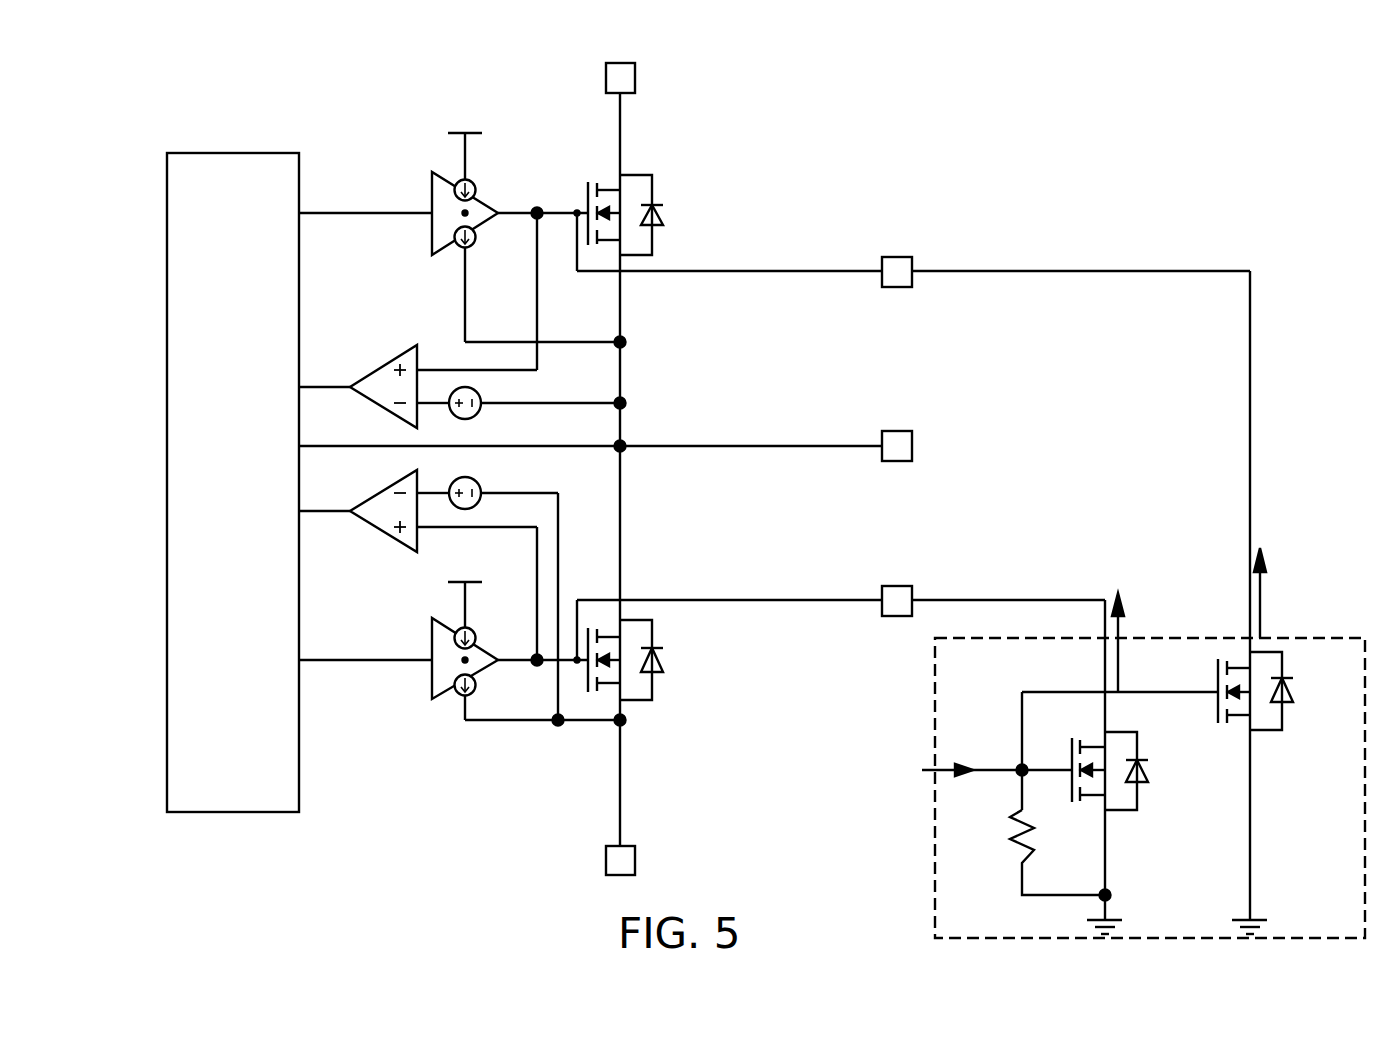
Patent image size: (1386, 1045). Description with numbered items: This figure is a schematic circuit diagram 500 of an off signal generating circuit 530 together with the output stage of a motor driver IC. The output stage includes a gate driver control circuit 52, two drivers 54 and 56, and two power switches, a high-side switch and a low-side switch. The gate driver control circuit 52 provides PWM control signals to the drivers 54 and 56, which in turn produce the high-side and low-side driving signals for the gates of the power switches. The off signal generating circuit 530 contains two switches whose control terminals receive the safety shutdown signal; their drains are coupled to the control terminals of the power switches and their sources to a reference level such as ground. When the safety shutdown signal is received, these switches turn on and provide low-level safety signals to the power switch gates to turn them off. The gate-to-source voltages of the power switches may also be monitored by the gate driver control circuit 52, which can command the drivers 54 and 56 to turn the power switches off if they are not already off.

The schematic circuit diagram 500 is at (1325, 49).
The gate driver control circuit 52 is at (227, 812).
The driver 54 is at (433, 257).
The driver 56 is at (432, 699).
The off signal generating circuit 530 is at (1307, 637).